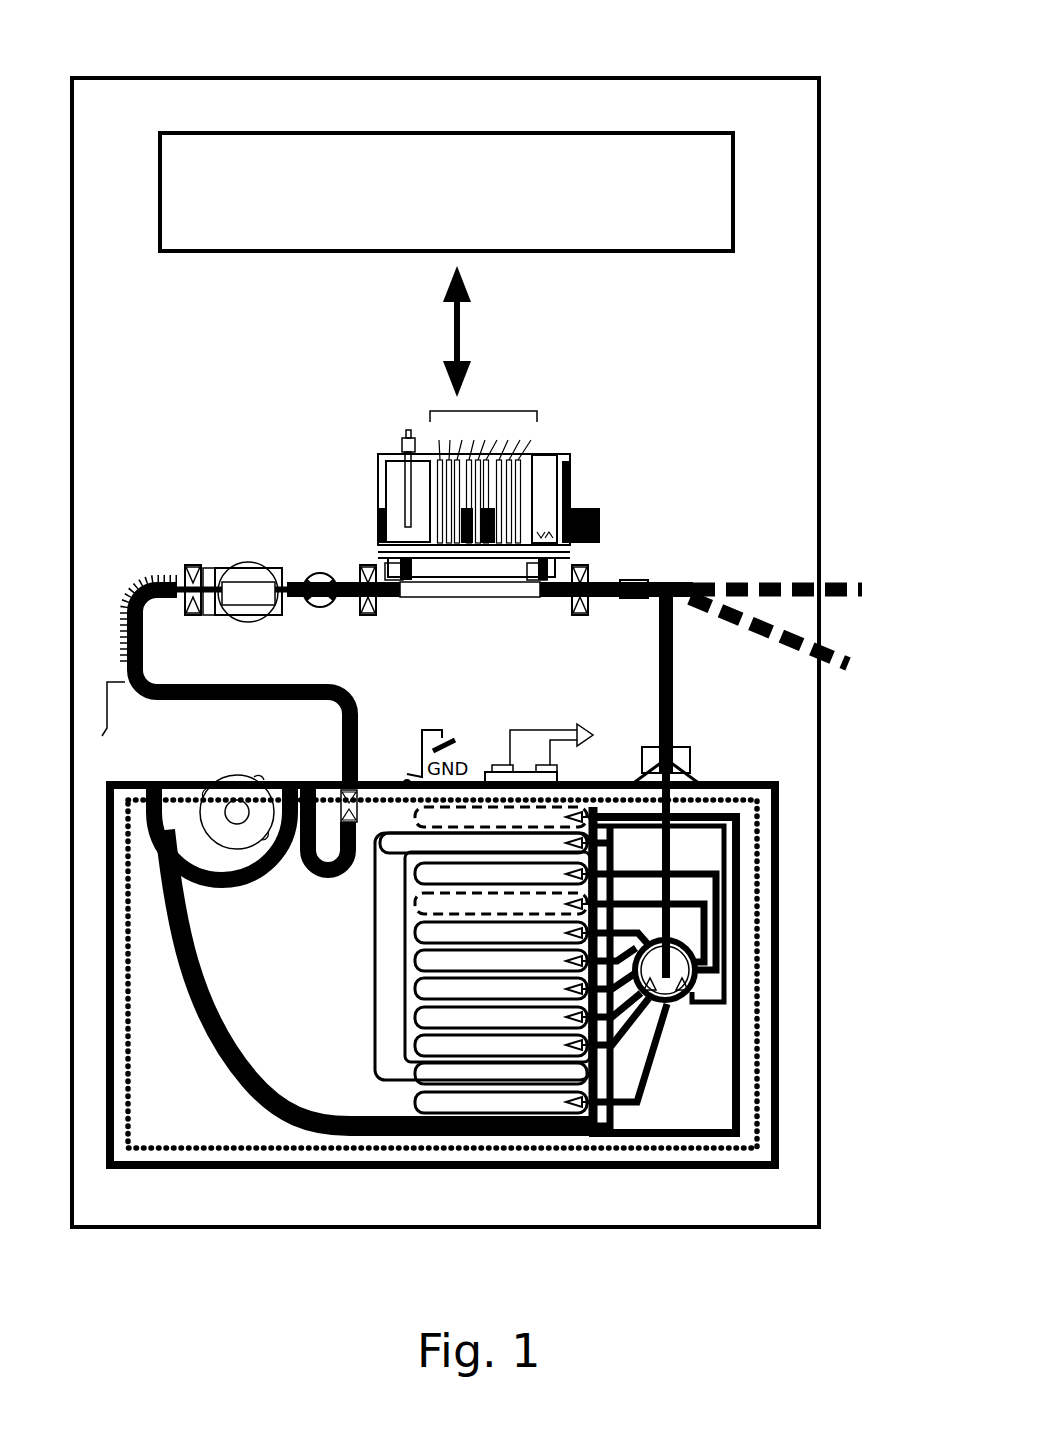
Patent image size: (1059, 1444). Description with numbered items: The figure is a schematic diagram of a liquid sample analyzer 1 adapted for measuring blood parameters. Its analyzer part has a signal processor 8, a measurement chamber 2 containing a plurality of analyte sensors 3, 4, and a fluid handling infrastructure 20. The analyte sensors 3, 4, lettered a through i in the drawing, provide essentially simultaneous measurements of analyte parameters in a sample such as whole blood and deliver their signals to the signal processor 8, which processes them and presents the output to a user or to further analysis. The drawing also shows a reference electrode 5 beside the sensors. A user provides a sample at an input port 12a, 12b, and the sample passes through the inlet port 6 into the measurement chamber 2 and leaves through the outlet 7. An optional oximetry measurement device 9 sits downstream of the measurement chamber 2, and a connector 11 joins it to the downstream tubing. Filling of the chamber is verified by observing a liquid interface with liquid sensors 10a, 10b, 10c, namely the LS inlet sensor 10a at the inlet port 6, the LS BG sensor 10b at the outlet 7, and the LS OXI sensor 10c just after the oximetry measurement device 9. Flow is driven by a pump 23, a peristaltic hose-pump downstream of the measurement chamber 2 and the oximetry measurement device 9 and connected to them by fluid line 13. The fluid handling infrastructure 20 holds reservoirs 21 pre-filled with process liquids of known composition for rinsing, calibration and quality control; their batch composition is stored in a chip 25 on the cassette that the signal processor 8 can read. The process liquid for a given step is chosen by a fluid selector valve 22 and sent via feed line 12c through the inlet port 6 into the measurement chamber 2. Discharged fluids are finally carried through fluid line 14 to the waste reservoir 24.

The liquid sample analyzer 1 is at (782, 70).
The measurement chamber 2 is at (470, 553).
The analyte sensors 3 is at (513, 408).
The analyte sensor 4 is at (547, 463).
The ISE reference electrode 5 is at (400, 490).
The inlet port 6 is at (540, 577).
The outlet 7 is at (410, 573).
The signal processor 8 is at (660, 253).
The oximetry measurement device 9 is at (252, 572).
The liquid sensor 10a is at (582, 565).
The liquid sensor 10b is at (370, 565).
The liquid sensor 10c is at (193, 567).
The connector valve 11 is at (320, 607).
The input port 12a is at (752, 582).
The input port 12b is at (762, 635).
The feed line 12c is at (673, 698).
The fluid line 13 is at (136, 608).
The fluid line 14 is at (207, 1022).
The fluid handling infrastructure 20 is at (745, 786).
The reservoirs 21 is at (437, 1102).
The fluid selector valve 22 is at (688, 1088).
The pump 23 is at (235, 805).
The waste reservoir 24 is at (398, 866).
The chip 25 is at (512, 775).